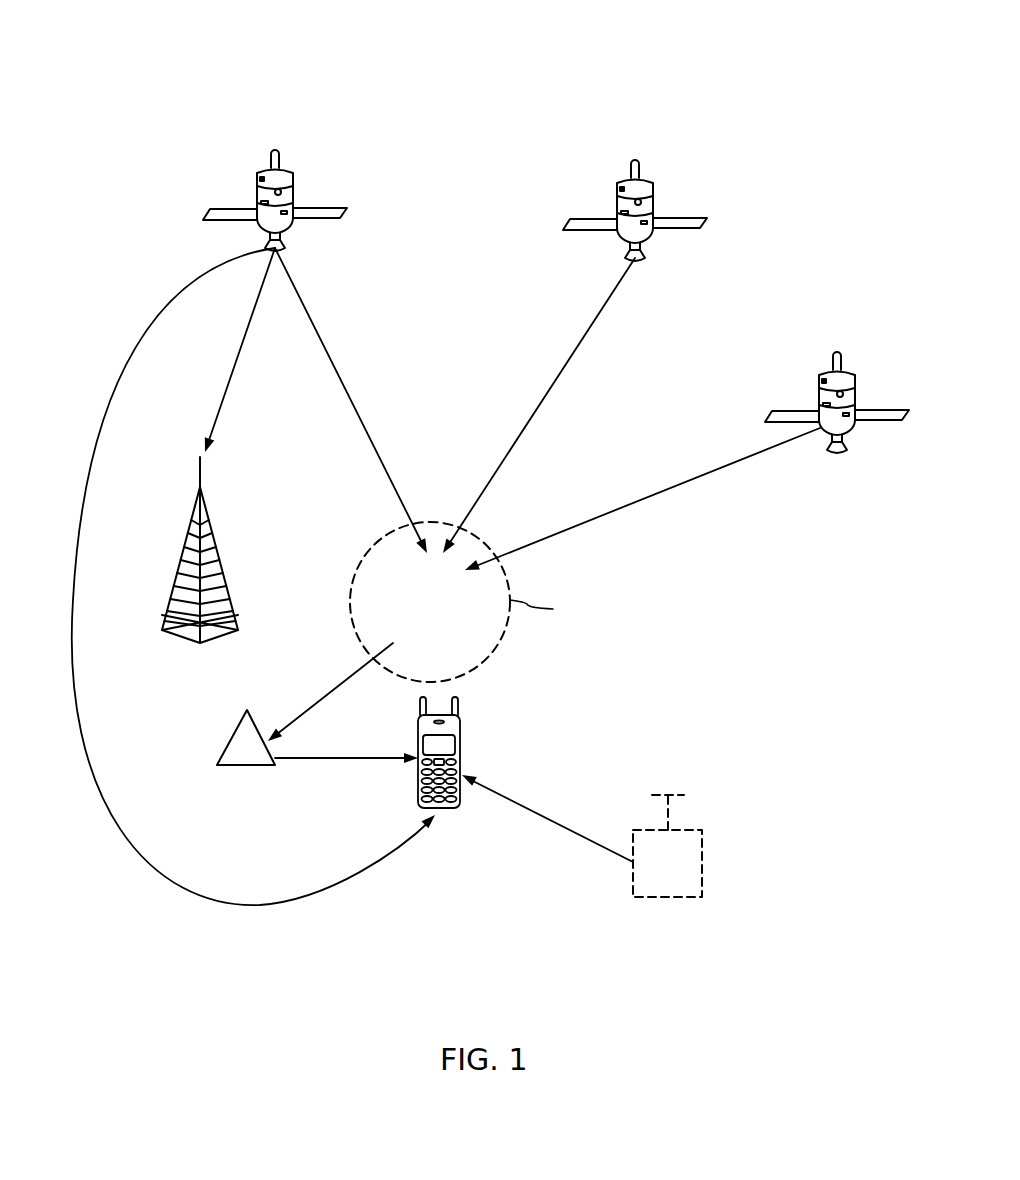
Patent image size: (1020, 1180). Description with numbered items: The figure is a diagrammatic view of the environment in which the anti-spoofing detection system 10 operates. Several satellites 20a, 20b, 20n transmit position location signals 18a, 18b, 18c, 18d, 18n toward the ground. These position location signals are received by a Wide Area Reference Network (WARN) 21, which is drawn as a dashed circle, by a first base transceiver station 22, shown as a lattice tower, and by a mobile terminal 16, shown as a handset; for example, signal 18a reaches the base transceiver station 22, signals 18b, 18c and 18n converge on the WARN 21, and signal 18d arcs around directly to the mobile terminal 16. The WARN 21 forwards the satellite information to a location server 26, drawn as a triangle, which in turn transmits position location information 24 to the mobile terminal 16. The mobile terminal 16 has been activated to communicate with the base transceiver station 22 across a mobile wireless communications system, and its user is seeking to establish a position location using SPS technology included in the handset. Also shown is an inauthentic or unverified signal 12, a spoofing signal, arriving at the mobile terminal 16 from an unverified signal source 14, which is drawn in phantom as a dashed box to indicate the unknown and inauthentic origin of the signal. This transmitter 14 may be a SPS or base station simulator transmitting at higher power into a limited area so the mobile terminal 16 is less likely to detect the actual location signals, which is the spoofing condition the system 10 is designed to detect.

The anti-spoofing detection system 10 is at (502, 64).
The unverified signal 12 is at (548, 818).
The unverified signal source 14 is at (683, 830).
The mobile terminal 16 is at (460, 740).
The position location signal 18a is at (244, 333).
The position location signal 18b is at (322, 335).
The position location signal 18c is at (585, 330).
The position location signal 18d is at (127, 356).
The position location signal 18n is at (693, 480).
The satellite 20a is at (325, 208).
The satellite 20b is at (685, 218).
The satellite 20n is at (787, 410).
The Wide Area Reference Network 21 is at (365, 553).
The base transceiver station 22 is at (183, 548).
The position location information 24 is at (322, 758).
The location server 26 is at (235, 733).